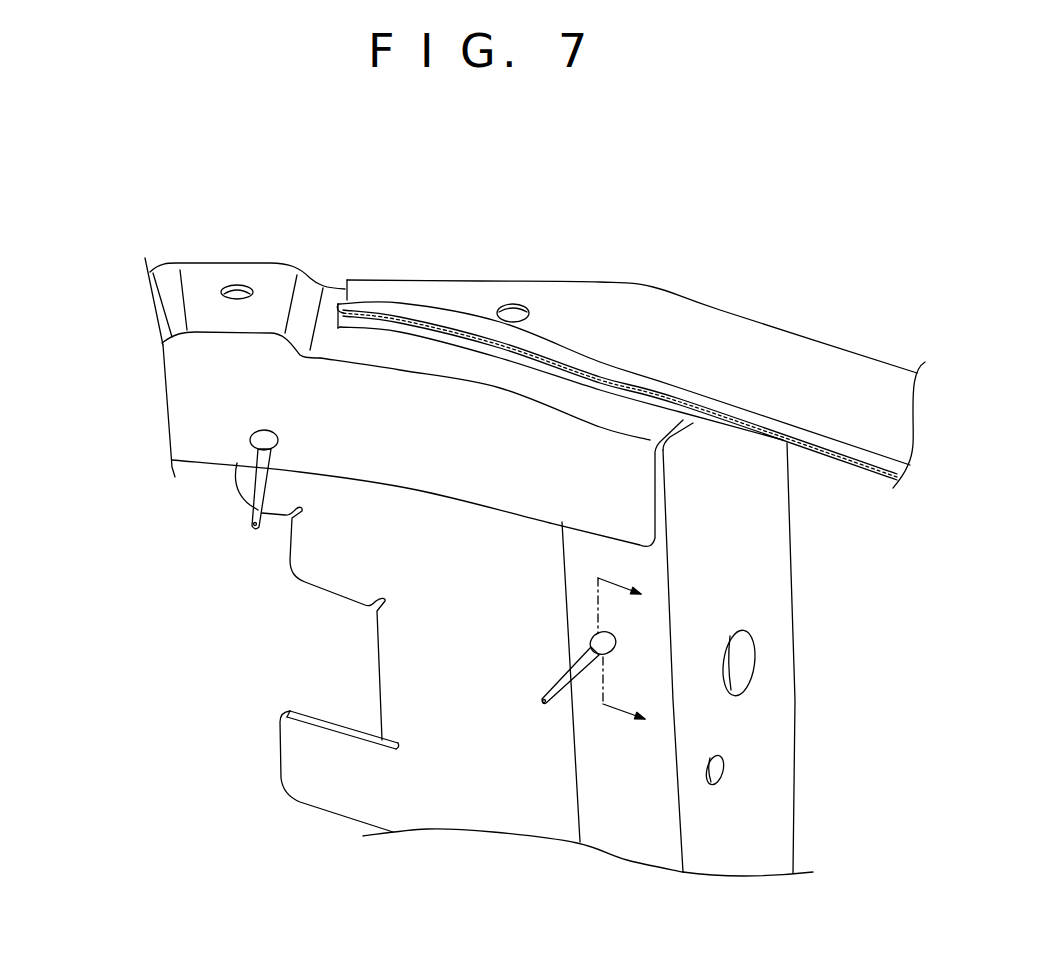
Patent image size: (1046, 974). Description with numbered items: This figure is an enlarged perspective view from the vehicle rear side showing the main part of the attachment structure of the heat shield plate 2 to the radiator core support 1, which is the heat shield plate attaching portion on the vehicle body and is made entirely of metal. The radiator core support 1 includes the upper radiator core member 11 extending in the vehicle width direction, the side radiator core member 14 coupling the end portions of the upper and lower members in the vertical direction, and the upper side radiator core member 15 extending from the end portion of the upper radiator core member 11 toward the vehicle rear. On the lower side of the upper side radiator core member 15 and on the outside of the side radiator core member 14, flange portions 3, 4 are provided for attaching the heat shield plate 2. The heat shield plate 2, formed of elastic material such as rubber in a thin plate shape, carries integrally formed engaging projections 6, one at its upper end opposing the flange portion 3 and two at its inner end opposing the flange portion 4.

The radiator core support 1 is at (631, 353).
The heat shield plate 2 is at (446, 804).
The flange portion 3 is at (183, 370).
The flange portion 4 is at (644, 841).
The engaging projection 6 is at (250, 452).
The upper radiator core member 11 is at (712, 337).
The side radiator core member 14 is at (763, 828).
The upper side radiator core member 15 is at (208, 278).